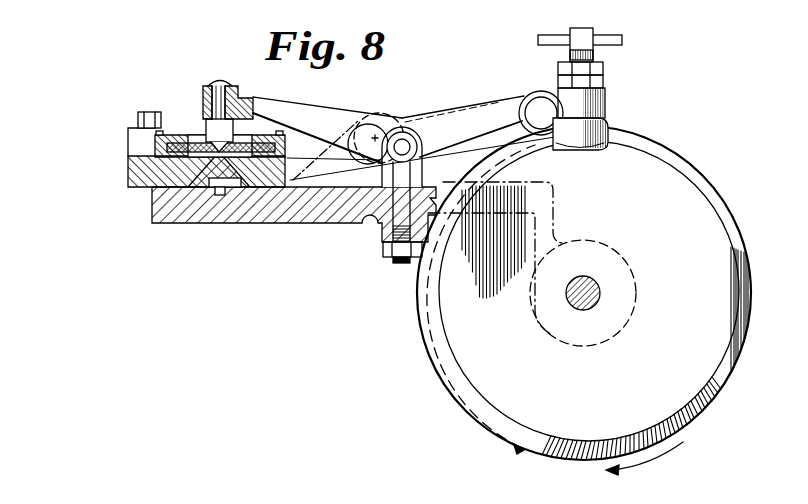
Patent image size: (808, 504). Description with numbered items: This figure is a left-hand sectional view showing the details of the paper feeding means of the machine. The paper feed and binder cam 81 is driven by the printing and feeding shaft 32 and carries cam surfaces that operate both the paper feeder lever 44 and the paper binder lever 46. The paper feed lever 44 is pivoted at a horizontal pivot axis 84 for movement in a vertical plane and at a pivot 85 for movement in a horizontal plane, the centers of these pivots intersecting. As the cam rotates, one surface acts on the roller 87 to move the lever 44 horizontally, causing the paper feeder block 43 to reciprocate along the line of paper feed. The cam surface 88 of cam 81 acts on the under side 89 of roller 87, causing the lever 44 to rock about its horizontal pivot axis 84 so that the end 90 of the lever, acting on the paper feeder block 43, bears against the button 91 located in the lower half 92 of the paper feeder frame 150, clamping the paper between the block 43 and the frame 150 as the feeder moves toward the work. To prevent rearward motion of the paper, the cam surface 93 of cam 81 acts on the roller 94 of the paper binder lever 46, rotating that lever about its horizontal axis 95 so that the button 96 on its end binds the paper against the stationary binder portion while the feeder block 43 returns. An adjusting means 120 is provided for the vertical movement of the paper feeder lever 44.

The printing and feeding shaft 32 is at (590, 307).
The paper feeder block 43 is at (213, 127).
The paper feeder lever 44 is at (338, 117).
The paper binder lever 46 is at (326, 172).
The paper feed and binder cam 81 is at (699, 347).
The horizontal pivot axis 84 is at (404, 140).
The vertical pivot 85 is at (400, 224).
The roller 87 is at (613, 125).
The cam surface 88 is at (702, 208).
The under side of roller 89 is at (598, 148).
The end of lever 90 is at (205, 90).
The button 91 is at (245, 117).
The lower half of paper feeder frame 92 is at (165, 149).
The cam surface 93 is at (427, 333).
The roller 94 is at (511, 128).
The horizontal axis 95 is at (380, 130).
The button 96 is at (200, 160).
The adjusting means 120 is at (597, 50).
The paper feeder frame 150 is at (154, 140).